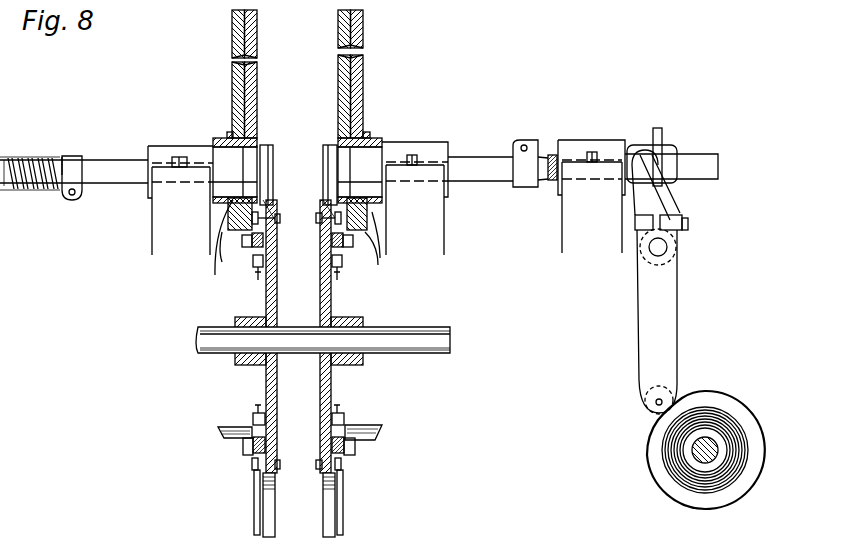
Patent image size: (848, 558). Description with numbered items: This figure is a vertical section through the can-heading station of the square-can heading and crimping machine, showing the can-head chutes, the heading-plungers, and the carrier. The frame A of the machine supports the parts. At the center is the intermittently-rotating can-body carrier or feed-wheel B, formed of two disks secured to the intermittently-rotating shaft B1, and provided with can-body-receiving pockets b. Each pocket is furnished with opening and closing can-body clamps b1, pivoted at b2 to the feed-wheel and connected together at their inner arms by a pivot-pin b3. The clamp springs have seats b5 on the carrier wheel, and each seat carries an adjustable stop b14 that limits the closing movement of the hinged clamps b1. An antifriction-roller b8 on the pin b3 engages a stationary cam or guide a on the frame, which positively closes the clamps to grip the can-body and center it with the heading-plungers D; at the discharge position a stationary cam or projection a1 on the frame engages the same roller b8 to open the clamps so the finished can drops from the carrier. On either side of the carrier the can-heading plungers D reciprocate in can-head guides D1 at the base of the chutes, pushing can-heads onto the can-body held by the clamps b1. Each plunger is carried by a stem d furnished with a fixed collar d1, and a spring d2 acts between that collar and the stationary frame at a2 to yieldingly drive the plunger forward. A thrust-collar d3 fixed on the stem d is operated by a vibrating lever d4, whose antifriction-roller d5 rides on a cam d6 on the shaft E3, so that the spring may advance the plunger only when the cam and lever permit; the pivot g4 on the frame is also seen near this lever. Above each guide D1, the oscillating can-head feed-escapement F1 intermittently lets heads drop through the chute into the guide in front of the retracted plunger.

The oscillating can-head feed-escapement F1 is at (372, 58).
The can-heading plunger D is at (348, 150).
The can-head guide D1 is at (236, 256).
The stem d is at (115, 163).
The collar d1 is at (77, 155).
The spring d2 is at (557, 183).
The thrust-collar d3 is at (660, 137).
The vibrating lever d4 is at (672, 202).
The antifriction-roller d5 is at (645, 405).
The cam d6 is at (737, 397).
The pivot g4 is at (664, 247).
The shaft E3 is at (700, 458).
The frame A is at (298, 198).
The stationary cam or guide a is at (366, 228).
The stationary cam or projection a1 is at (377, 445).
The stationary frame spring abutment a2 is at (558, 140).
The can-body carrier or feed-wheel B is at (320, 383).
The intermittently-rotating shaft B1 is at (404, 327).
The can-body-receiving pocket b is at (322, 172).
The can-body clamp b1 is at (324, 190).
The pivot b2 is at (316, 218).
The pivot-pin b3 is at (332, 238).
The spring seat b5 is at (343, 268).
The antifriction-roller b8 is at (367, 468).
The adjustable stop b14 is at (340, 280).